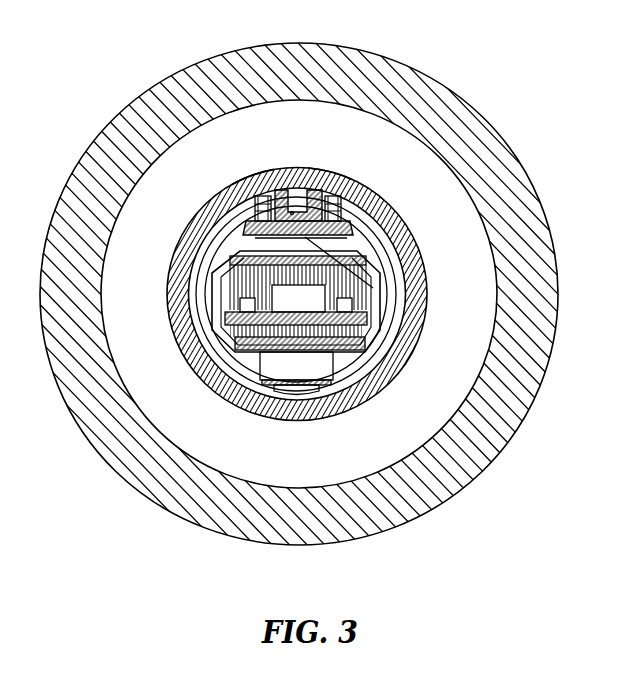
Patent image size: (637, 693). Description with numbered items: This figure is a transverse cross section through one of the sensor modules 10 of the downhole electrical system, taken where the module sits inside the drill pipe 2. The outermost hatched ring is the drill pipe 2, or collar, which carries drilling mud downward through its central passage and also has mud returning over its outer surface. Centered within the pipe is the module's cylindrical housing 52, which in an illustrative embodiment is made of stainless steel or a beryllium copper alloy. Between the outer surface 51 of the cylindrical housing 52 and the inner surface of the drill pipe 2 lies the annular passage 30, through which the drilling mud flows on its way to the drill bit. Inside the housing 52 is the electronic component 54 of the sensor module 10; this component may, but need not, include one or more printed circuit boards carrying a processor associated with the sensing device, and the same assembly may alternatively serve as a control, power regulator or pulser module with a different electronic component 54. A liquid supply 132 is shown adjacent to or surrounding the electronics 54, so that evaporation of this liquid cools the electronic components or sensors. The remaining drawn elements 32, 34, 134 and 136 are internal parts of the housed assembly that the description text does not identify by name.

The drill pipe 2 is at (497, 128).
The sensor module 10 is at (357, 419).
The annular passage 30 is at (312, 141).
The inner sleeve 32 is at (394, 306).
The mounting plate 34 is at (243, 235).
The outer surface 51 is at (232, 184).
The cylindrical housing 52 is at (318, 168).
The electronic component 54 is at (370, 340).
The liquid supply 132 is at (222, 297).
The housing 134 is at (365, 253).
The spacer ring 136 is at (386, 323).